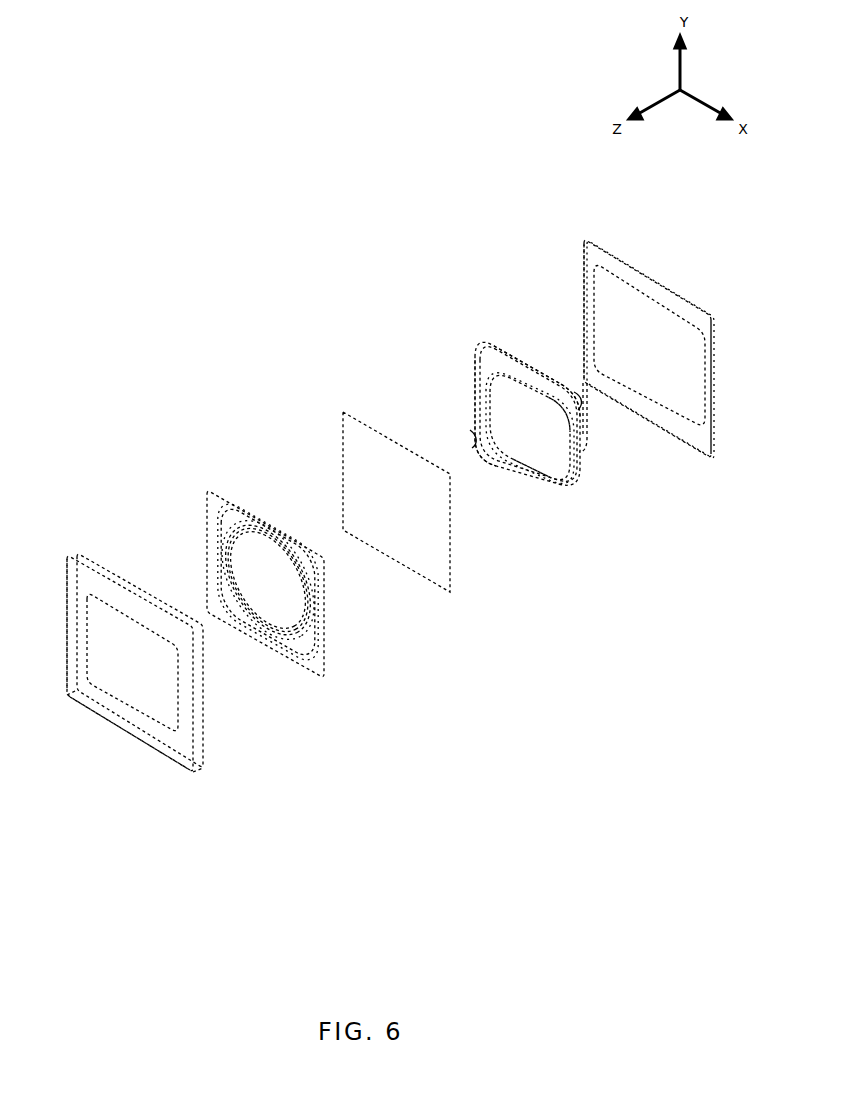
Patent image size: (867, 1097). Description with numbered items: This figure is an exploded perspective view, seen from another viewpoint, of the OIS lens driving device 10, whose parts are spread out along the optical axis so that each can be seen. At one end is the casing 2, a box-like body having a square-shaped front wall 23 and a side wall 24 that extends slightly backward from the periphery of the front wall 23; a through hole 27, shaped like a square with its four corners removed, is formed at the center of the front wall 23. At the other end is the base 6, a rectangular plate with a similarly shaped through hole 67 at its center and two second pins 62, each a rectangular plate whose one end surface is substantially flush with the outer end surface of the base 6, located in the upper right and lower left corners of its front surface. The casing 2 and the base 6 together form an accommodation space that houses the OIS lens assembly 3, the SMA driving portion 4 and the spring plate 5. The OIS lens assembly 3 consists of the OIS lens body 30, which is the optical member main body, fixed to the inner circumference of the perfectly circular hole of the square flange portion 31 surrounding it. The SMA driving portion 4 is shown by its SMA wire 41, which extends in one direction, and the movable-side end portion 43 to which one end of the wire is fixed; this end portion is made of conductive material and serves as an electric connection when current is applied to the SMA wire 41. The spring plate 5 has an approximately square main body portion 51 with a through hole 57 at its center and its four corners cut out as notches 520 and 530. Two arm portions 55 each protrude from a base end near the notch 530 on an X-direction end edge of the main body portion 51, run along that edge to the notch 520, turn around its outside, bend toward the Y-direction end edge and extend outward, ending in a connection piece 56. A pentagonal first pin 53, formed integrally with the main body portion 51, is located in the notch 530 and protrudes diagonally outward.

The OIS lens driving device 10 is at (277, 330).
The casing 2 is at (125, 733).
The front wall 23 is at (122, 603).
The side wall 24 is at (168, 755).
The through hole 27 is at (110, 693).
The OIS lens assembly 3 is at (280, 653).
The OIS lens body 30 is at (262, 593).
The flange portion 31 is at (315, 670).
The SMA driving portion 4 is at (453, 482).
The SMA wire 41 is at (395, 440).
The movable-side end portion 43 is at (575, 398).
The spring plate 5 is at (530, 419).
The main body portion 51 is at (550, 380).
The notch 520 is at (492, 349).
The notch 530 is at (492, 446).
The first pin 53 is at (472, 437).
The arm portion 55 is at (510, 348).
The connection piece 56 is at (473, 403).
The through hole 57 is at (558, 453).
The base 6 is at (644, 350).
The second pin 62 is at (583, 258).
The through hole 67 is at (678, 370).